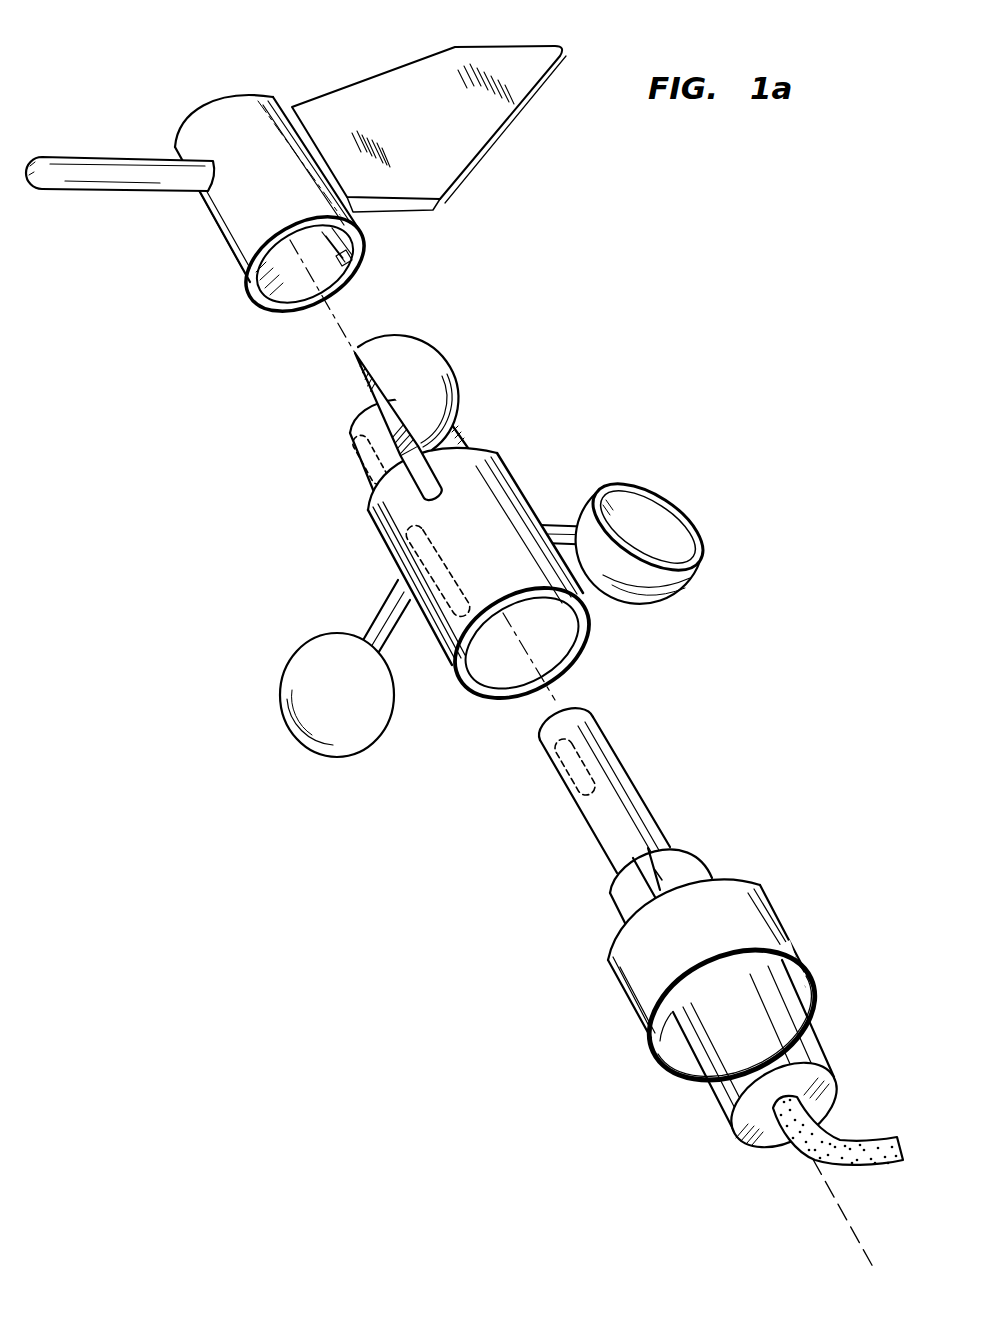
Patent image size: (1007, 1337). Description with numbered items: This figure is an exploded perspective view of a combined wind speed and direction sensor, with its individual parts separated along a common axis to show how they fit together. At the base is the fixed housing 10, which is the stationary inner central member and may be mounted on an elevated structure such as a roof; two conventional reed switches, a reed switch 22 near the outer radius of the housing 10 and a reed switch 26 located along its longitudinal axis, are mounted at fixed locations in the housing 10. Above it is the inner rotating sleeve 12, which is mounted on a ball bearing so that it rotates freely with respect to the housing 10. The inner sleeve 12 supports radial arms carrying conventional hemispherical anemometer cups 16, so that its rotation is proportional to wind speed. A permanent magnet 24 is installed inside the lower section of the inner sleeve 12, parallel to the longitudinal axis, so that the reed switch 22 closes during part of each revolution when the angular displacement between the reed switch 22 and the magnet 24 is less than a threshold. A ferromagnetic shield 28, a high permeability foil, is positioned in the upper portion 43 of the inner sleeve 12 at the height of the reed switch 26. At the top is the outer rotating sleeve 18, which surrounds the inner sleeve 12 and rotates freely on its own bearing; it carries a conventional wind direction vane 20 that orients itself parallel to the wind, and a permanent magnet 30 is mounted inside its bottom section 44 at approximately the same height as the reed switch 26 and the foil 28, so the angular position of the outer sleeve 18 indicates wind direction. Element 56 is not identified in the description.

The housing 10 is at (555, 945).
The inner rotating sleeve 12 is at (366, 551).
The anemometer cup 16 is at (440, 367).
The outer rotating sleeve 18 is at (212, 92).
The wind direction vane 20 is at (361, 92).
The reed switch 22 is at (657, 873).
The permanent magnet 24 is at (440, 620).
The reed switch 26 is at (562, 758).
The ferromagnetic shield 28 is at (352, 462).
The permanent magnet 30 is at (346, 264).
The upper portion of sleeve 43 is at (463, 430).
The bottom section of sleeve 44 is at (236, 247).
The lower cylinder with cable 56 is at (812, 1043).